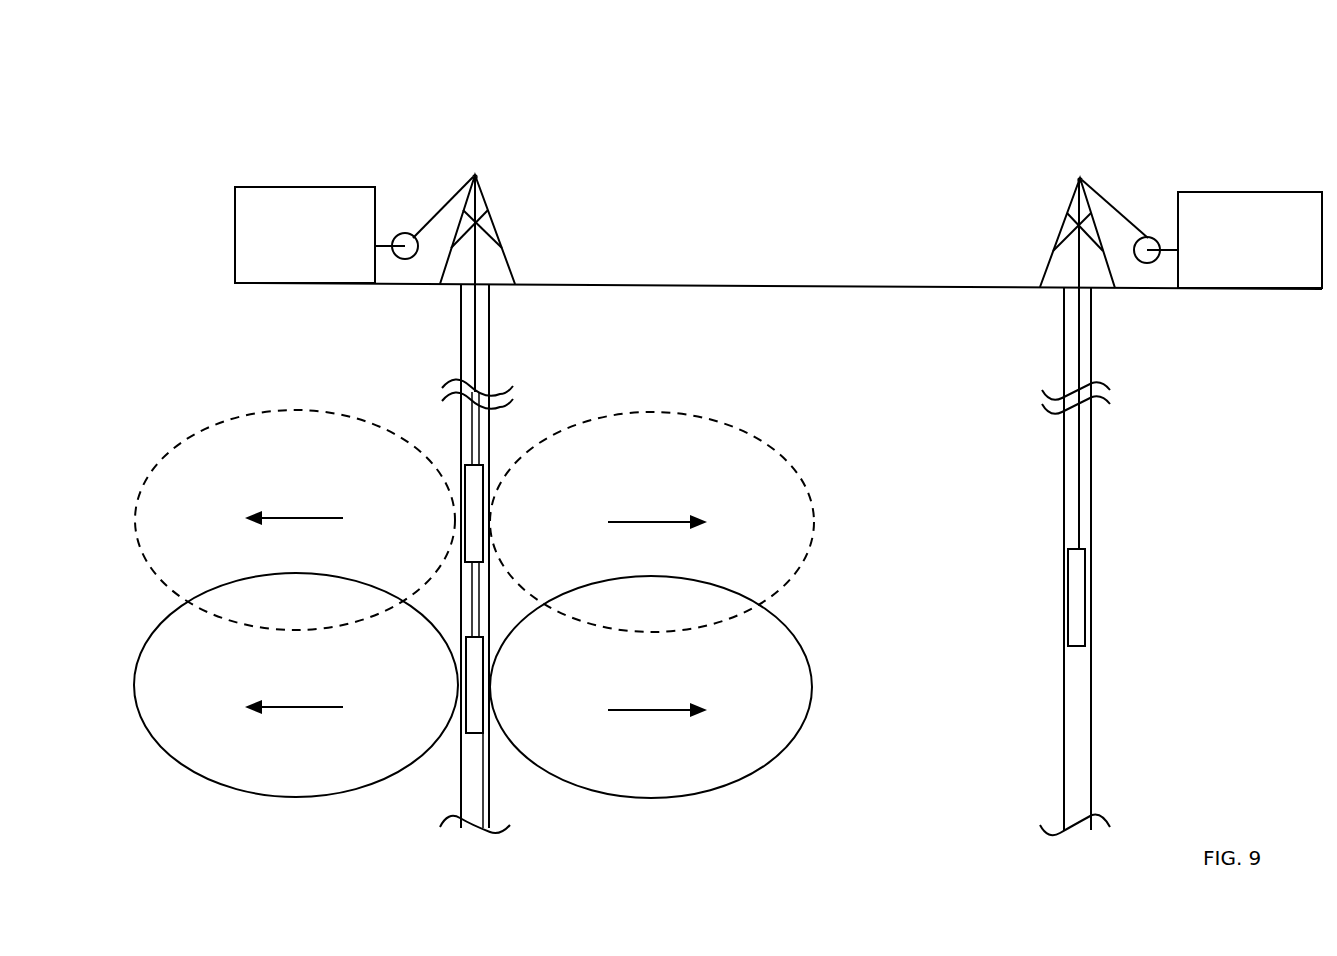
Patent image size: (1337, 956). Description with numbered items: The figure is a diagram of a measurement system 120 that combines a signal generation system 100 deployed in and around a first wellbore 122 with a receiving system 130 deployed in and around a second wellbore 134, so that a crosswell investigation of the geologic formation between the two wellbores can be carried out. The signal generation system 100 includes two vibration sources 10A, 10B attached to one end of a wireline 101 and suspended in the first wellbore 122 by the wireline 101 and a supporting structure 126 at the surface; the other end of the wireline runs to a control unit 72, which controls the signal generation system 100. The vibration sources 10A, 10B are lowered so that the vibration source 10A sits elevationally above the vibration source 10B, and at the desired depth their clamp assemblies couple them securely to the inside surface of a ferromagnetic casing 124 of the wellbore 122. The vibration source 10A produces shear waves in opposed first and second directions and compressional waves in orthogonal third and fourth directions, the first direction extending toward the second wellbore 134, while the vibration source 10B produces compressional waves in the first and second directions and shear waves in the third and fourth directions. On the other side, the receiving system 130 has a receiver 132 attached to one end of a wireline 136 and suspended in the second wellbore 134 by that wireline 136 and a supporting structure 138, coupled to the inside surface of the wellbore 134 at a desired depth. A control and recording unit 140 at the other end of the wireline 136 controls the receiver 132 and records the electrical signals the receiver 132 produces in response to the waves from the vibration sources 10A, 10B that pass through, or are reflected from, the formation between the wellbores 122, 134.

The control unit 72 is at (318, 248).
The wireline 101 is at (435, 210).
The supporting structure 126 is at (500, 235).
The measurement system 120 is at (890, 95).
The first wellbore 122 is at (466, 352).
The ferromagnetic casing 124 is at (492, 360).
The signal generation system 100 is at (410, 603).
The vibration source 10A is at (466, 518).
The vibration source 10B is at (467, 690).
The receiving system 130 is at (1158, 128).
The wireline 136 is at (1122, 212).
The supporting structure 138 is at (1055, 236).
The control and recording unit 140 is at (1234, 240).
The second wellbore 134 is at (1085, 358).
The receiver 132 is at (1085, 592).